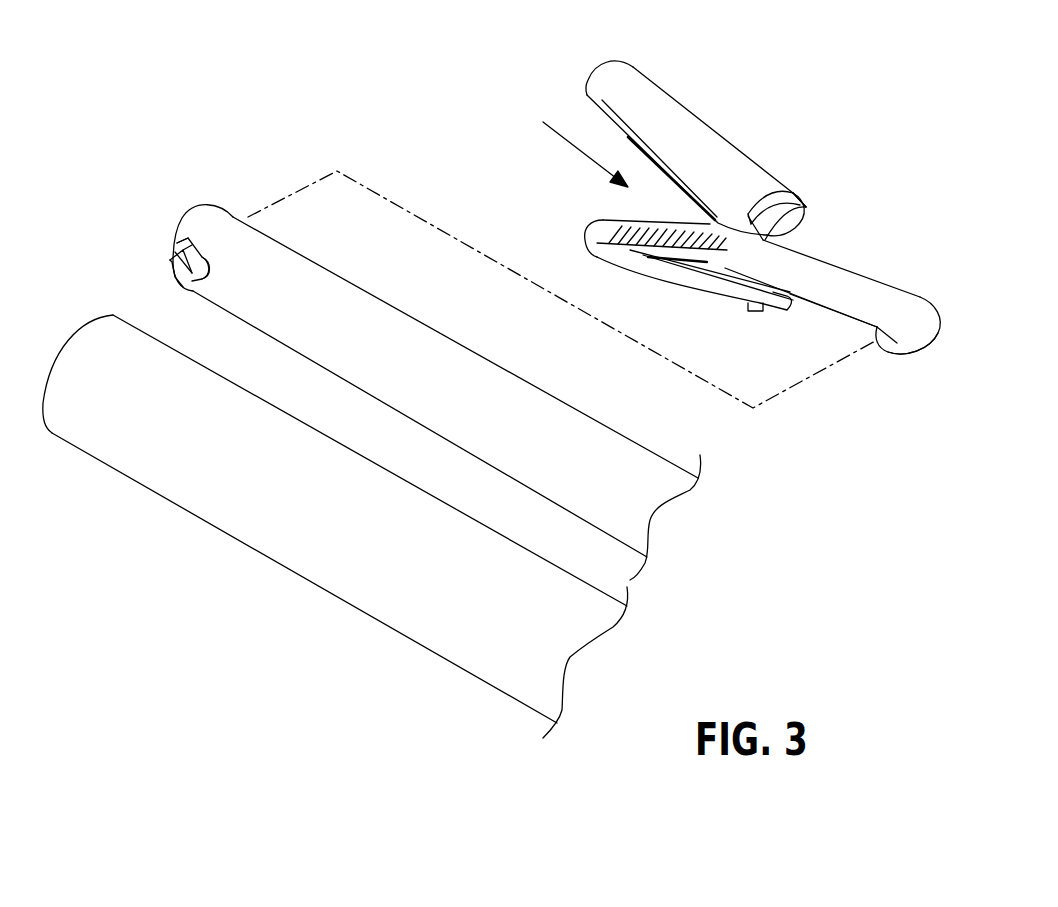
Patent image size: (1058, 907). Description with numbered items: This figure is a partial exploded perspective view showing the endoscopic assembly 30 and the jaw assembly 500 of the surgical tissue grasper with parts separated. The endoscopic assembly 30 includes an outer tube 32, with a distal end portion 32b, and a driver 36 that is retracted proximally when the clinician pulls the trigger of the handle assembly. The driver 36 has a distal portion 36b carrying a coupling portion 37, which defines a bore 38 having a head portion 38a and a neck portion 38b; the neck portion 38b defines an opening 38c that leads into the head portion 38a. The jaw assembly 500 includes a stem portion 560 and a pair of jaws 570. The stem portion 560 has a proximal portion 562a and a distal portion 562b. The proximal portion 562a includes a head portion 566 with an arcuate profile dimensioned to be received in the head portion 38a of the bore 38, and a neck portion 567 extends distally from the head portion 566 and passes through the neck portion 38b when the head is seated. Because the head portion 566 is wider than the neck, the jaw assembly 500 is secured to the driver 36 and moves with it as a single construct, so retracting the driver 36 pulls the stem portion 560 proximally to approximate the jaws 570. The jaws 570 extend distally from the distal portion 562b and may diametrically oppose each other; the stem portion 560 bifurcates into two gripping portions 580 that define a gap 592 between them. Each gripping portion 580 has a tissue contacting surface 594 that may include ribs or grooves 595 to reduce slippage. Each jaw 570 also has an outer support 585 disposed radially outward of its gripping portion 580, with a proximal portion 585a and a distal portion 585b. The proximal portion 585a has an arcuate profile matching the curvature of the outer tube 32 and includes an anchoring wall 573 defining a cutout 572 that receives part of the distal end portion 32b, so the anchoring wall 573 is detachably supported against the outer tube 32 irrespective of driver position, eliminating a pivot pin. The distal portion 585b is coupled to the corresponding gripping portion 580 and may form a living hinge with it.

The endoscopic assembly 30 is at (460, 403).
The outer tube 32 is at (335, 507).
The distal end portion 32b is at (68, 340).
The driver 36 is at (525, 392).
The distal portion 36b is at (232, 217).
The coupling portion 37 is at (185, 242).
The bore 38 is at (174, 208).
The head portion 38a is at (203, 260).
The neck portion 38b is at (170, 265).
The opening 38c is at (175, 252).
The jaw assembly 500 is at (840, 160).
The stem portion 560 is at (843, 333).
The proximal portion 562a is at (916, 297).
The distal portion 562b is at (790, 277).
The head portion 566 is at (913, 338).
The neck portion 567 is at (827, 313).
The pair of jaws 570 is at (731, 278).
The cutout 572 is at (803, 207).
The anchoring wall 573 is at (793, 193).
The gripping portion 580 is at (713, 220).
The outer support 585 is at (700, 271).
The proximal portion 585a is at (768, 193).
The distal portion 585b is at (612, 75).
The gap 592 is at (570, 143).
The tissue contacting surface 594 is at (625, 239).
The ribs or grooves 595 is at (640, 237).